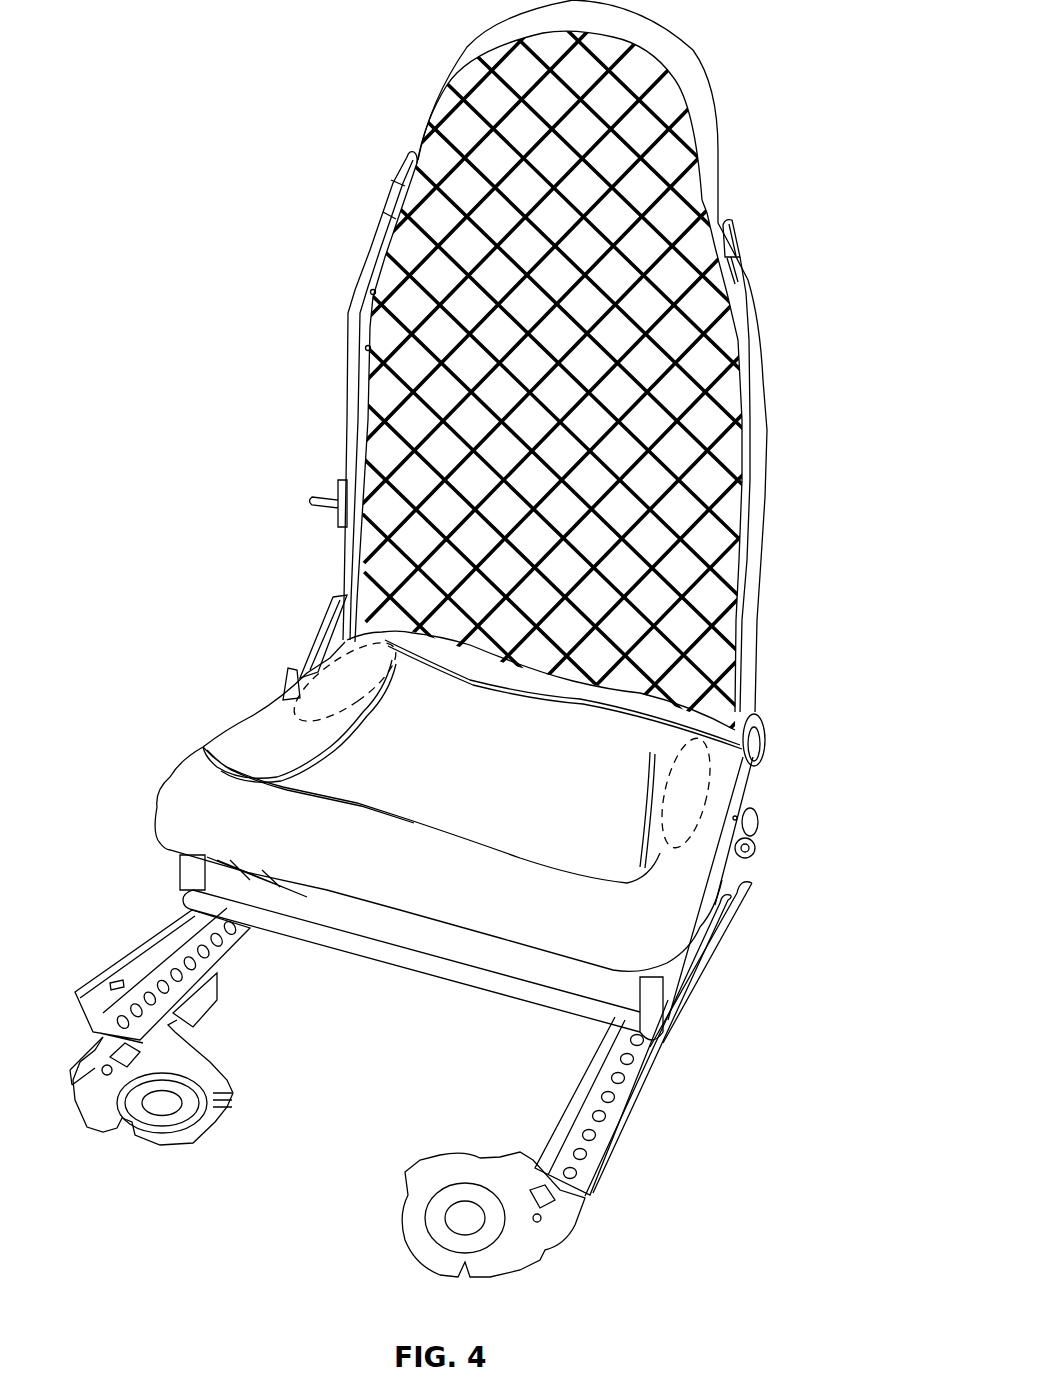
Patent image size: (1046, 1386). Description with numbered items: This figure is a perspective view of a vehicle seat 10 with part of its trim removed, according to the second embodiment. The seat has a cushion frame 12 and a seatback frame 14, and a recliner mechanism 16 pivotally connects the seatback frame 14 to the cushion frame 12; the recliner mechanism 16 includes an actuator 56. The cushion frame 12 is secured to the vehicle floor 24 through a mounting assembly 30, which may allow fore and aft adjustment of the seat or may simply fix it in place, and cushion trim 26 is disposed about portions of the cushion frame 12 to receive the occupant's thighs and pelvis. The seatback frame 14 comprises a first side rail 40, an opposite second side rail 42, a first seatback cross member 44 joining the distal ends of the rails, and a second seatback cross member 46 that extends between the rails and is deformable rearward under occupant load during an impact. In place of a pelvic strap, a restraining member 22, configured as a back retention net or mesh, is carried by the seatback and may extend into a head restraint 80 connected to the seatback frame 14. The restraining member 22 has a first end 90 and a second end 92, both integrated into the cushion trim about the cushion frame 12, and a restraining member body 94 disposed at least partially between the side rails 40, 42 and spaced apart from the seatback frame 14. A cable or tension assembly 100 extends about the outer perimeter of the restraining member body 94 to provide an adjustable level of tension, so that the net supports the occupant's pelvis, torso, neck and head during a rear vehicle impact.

The vehicle seat 10 is at (467, 638).
The cushion frame 12 is at (513, 992).
The seatback frame 14 is at (745, 217).
The recliner mechanism 16 is at (325, 625).
The restraining member 22 is at (483, 103).
The vehicle floor 24 is at (320, 1133).
The cushion trim 26 is at (672, 922).
The mounting assembly 30 is at (675, 972).
The first side rail 40 is at (770, 463).
The second side rail 42 is at (343, 360).
The first seatback cross member 44 is at (640, 181).
The second seatback cross member 46 is at (718, 413).
The actuator 56 is at (757, 742).
The head restraint 80 is at (661, 46).
The first end 90 is at (707, 760).
The second end 92 is at (315, 660).
The restraining member body 94 is at (732, 280).
The frame band 100 is at (746, 350).